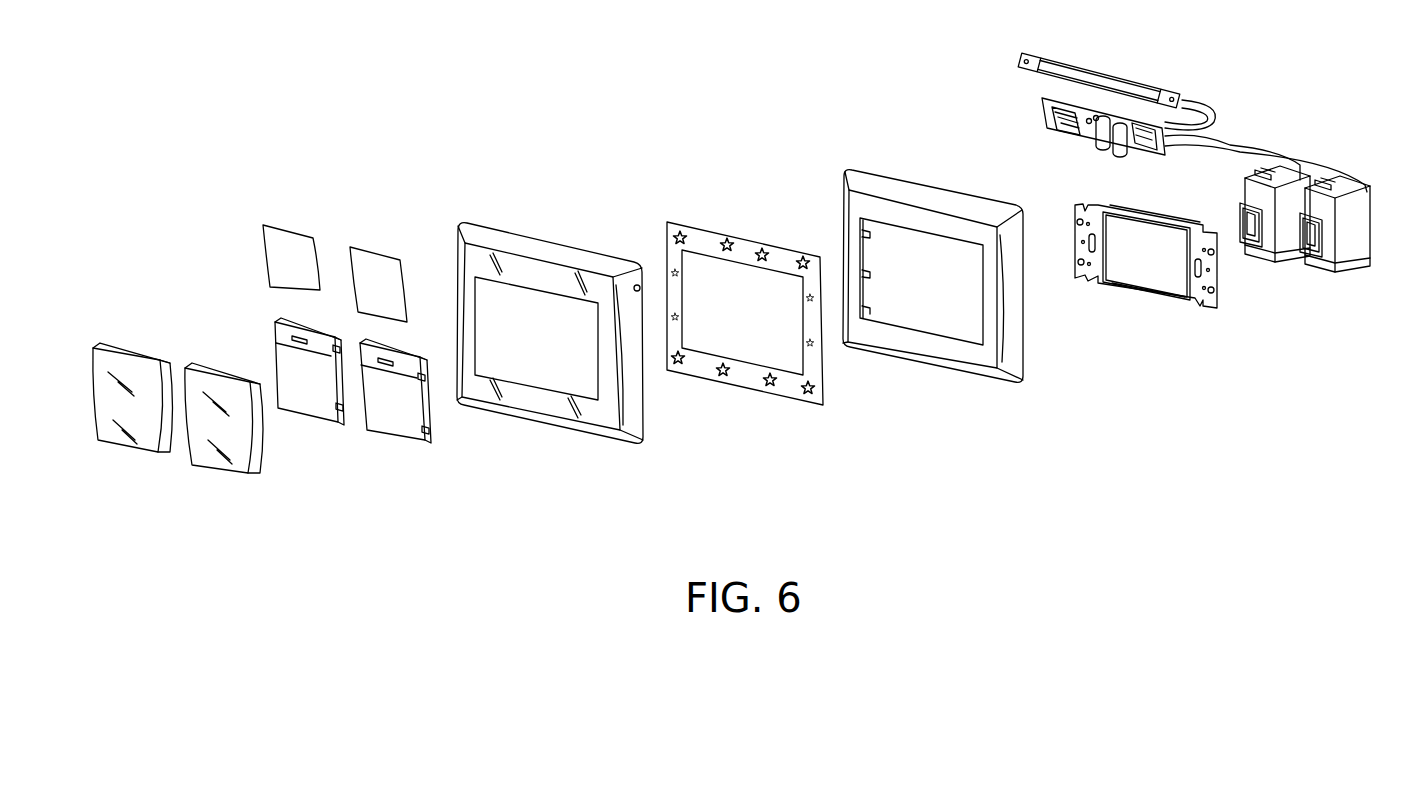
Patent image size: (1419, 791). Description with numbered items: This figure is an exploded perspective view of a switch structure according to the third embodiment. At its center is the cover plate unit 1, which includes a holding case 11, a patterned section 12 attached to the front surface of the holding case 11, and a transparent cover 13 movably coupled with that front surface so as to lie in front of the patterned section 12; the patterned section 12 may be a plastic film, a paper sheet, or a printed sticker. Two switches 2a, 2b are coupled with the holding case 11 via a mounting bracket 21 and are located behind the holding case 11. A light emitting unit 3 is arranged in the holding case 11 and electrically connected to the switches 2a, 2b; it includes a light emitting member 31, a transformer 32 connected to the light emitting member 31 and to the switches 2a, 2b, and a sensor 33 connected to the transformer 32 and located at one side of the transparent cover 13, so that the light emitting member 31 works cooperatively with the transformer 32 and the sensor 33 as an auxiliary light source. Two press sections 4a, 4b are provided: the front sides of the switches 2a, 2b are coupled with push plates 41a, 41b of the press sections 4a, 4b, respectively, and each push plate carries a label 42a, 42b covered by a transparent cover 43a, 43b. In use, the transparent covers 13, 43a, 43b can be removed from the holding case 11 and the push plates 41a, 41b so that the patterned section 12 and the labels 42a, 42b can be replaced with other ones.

The cover plate unit 1 is at (950, 457).
The holding case 11 is at (968, 360).
The patterned section 12 is at (815, 402).
The transparent cover 13 is at (637, 410).
The switch 2a is at (1272, 263).
The switch 2b is at (1333, 277).
The mounting bracket 21 is at (1167, 302).
The light emitting unit 3 is at (1117, 70).
The light emitting member 31 is at (1078, 76).
The transformer 32 is at (1050, 107).
The sensor 33 is at (635, 285).
The press section 4a is at (277, 167).
The push plate 41a is at (275, 330).
The label 42a is at (290, 232).
The transparent cover 43a is at (148, 354).
The press section 4b is at (518, 508).
The push plate 41b is at (395, 428).
The label 42b is at (408, 313).
The transparent cover 43b is at (240, 477).